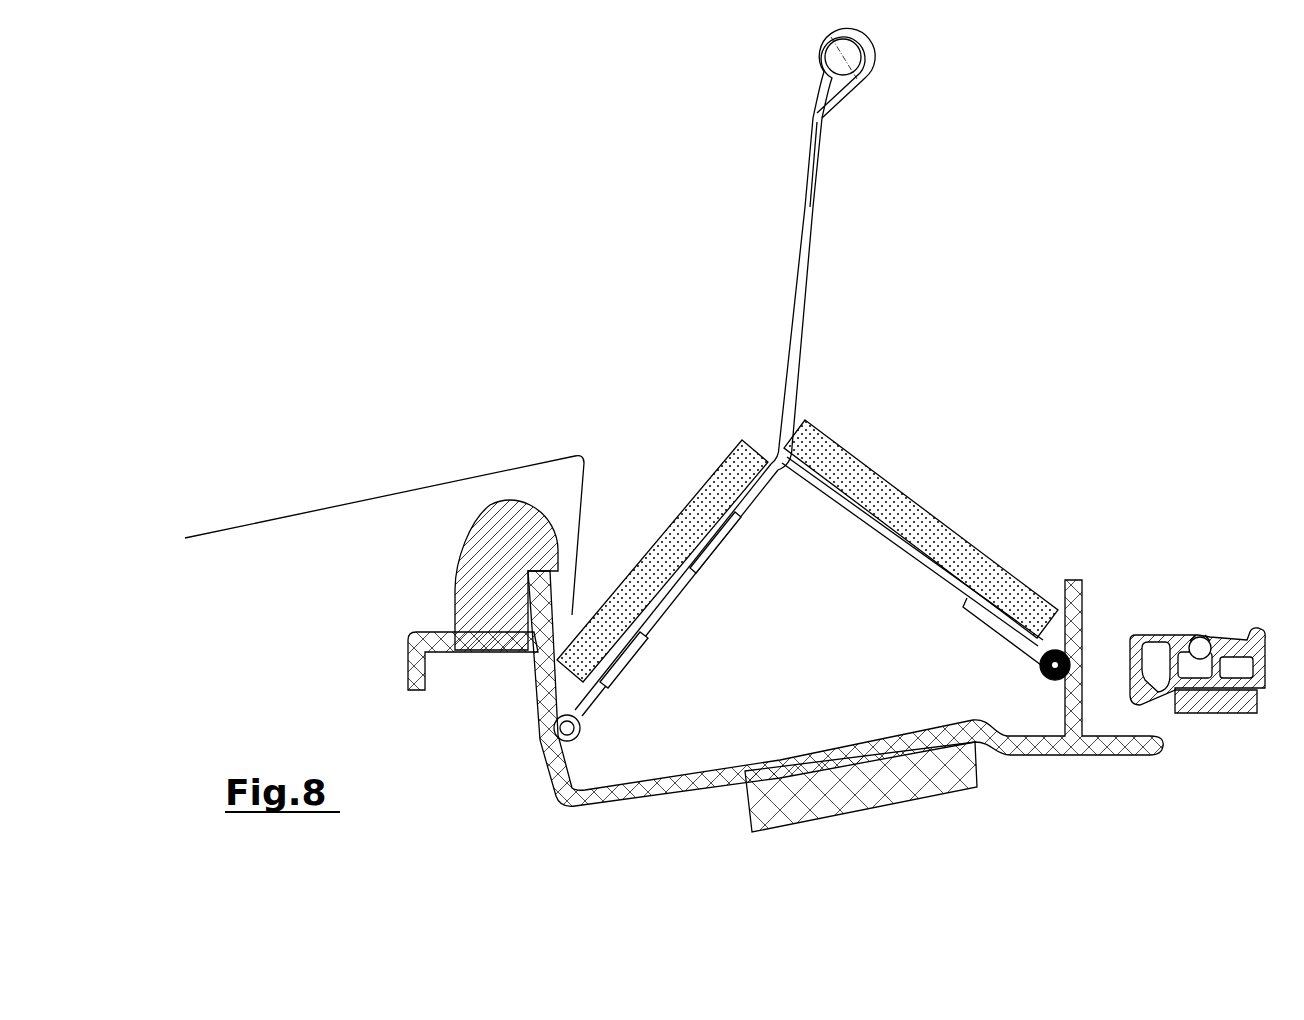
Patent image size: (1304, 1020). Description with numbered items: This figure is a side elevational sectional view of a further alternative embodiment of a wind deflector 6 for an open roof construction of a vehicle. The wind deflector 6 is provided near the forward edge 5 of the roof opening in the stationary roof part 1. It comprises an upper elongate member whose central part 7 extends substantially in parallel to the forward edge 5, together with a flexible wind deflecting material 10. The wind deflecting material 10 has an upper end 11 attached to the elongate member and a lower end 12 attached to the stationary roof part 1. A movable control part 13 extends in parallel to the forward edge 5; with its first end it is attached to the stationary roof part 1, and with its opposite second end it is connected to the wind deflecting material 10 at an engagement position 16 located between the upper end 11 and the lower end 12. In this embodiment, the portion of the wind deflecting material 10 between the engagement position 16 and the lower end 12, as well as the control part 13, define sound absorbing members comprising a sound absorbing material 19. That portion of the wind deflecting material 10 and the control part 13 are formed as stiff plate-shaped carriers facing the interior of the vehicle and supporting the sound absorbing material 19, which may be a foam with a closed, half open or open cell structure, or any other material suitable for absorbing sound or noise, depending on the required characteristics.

The stationary roof part 1 is at (682, 784).
The forward edge 5 is at (586, 500).
The wind deflector 6 is at (800, 354).
The central part 7 is at (861, 60).
The flexible wind deflecting material 10 is at (800, 270).
The upper end 11 is at (812, 125).
The lower end 12 is at (592, 688).
The movable control part 13 is at (910, 555).
The engagement position 16 is at (776, 477).
The sound absorbing material 19 is at (692, 510).